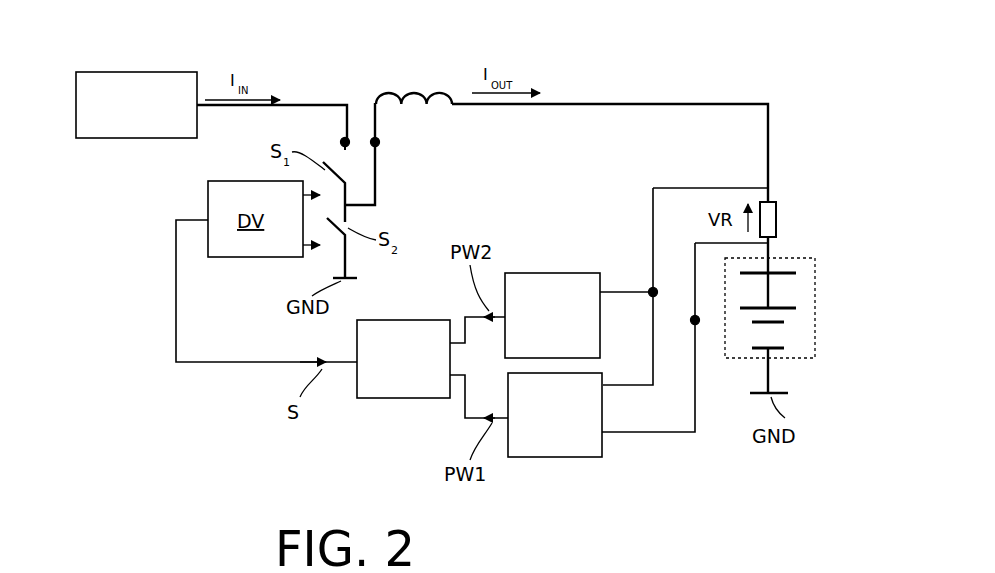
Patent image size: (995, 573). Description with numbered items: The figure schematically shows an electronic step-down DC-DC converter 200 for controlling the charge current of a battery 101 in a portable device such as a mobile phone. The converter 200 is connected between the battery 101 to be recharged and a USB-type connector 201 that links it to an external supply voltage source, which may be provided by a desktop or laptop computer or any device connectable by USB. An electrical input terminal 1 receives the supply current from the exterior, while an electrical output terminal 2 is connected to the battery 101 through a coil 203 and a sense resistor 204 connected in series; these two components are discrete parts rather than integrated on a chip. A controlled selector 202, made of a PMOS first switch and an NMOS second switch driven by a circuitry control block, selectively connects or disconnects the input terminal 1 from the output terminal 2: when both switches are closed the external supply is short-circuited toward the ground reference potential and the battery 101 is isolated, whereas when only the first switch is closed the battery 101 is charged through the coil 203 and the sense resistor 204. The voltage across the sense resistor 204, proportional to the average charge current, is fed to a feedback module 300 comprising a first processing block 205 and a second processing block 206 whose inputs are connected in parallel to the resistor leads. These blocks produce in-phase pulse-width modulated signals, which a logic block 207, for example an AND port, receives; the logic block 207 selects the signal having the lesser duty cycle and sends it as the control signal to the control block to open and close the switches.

The connector 201 is at (127, 72).
The electrical input terminal 1 is at (347, 138).
The electrical output terminal 2 is at (381, 143).
The controlled selector 202 is at (392, 172).
The coil 203 is at (406, 93).
The sense resistor 204 is at (777, 203).
The battery 101 is at (815, 277).
The first processing block 205 is at (562, 457).
The second processing block 206 is at (548, 273).
The logic block 207 is at (398, 400).
The step-down DC-DC converter 200 is at (222, 400).
The feedback module 300 is at (668, 458).